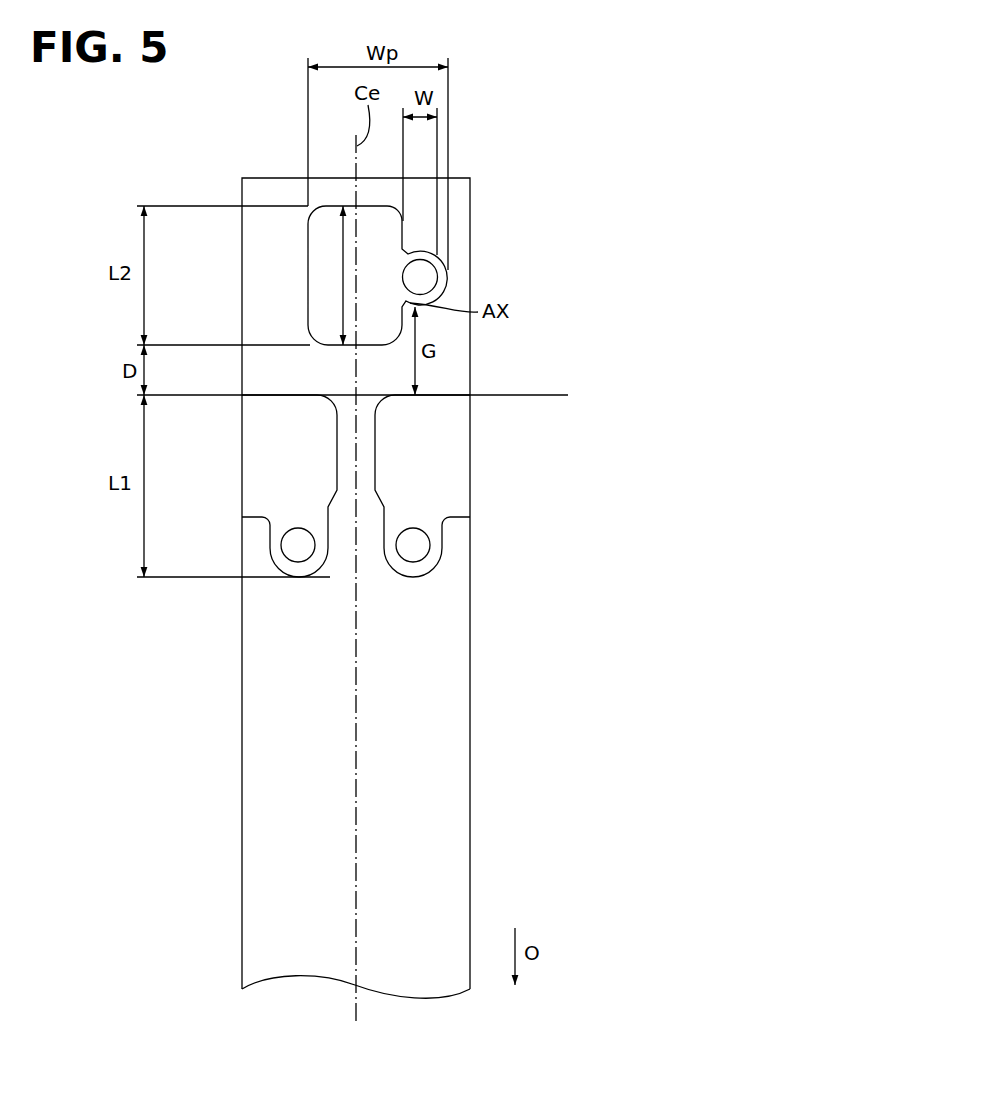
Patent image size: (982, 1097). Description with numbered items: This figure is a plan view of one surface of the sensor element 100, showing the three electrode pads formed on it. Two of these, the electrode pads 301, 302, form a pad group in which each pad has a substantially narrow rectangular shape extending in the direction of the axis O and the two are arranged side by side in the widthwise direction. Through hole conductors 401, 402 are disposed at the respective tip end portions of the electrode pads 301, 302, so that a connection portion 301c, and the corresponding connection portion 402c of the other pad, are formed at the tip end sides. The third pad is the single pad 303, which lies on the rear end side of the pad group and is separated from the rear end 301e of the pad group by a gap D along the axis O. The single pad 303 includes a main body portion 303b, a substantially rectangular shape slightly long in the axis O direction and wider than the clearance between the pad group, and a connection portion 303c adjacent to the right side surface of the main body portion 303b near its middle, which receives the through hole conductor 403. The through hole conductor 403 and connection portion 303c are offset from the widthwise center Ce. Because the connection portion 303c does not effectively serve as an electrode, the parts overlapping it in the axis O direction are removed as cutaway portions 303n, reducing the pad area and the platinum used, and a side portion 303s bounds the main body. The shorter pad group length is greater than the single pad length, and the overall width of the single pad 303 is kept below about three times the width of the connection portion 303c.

The sensor element 100 is at (725, 318).
The electrode pad 301 is at (270, 474).
The connection portion 301c is at (298, 545).
The rear end 301e is at (530, 395).
The electrode pad 302 is at (443, 467).
The single pad 303 is at (616, 252).
The main body portion 303b is at (386, 240).
The cutaway portion 303n is at (423, 221).
The slot side portion 303s is at (328, 268).
The connection portion 303c is at (420, 277).
The through hole conductor 401 is at (299, 548).
The through hole conductor 402 is at (413, 545).
The second pin circular portion 402c is at (413, 545).
The through hole conductor 403 is at (432, 285).